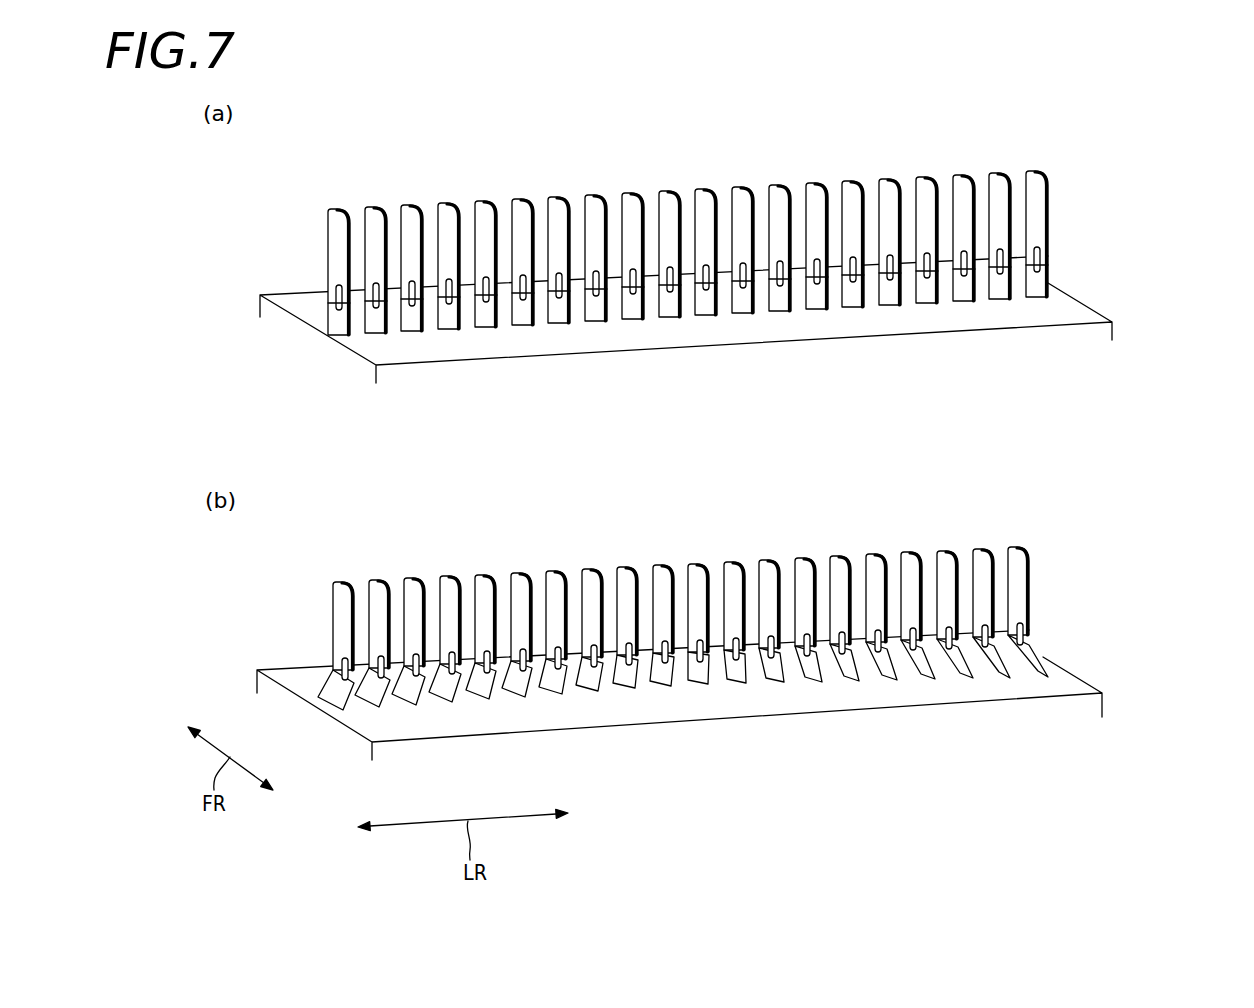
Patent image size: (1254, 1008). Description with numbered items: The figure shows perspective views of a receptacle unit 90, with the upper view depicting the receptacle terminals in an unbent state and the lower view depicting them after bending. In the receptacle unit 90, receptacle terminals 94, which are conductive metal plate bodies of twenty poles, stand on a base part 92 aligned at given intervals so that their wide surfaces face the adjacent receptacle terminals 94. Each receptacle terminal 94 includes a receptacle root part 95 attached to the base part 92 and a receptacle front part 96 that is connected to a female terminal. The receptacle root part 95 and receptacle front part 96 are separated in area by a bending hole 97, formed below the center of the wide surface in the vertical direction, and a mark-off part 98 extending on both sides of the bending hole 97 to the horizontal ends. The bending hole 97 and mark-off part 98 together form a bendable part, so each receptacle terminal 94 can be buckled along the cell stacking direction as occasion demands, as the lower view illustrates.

The receptacle unit 90 is at (1112, 322).
The base part 92 is at (1000, 316).
The receptacle terminal 94 is at (246, 176).
The receptacle root part 95 is at (336, 322).
The receptacle front part 96 is at (337, 233).
The bending hole 97 is at (340, 292).
The mark-off part 98 is at (337, 306).